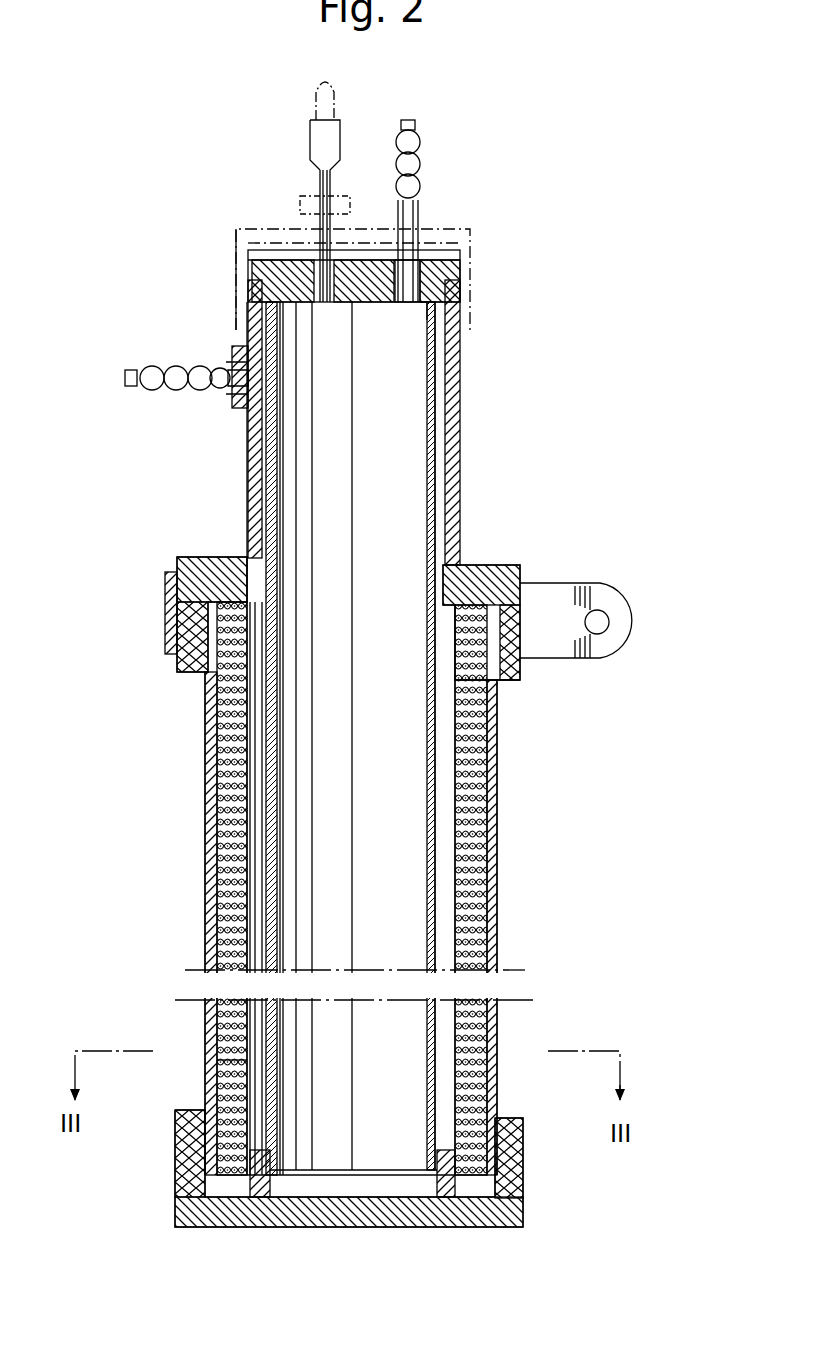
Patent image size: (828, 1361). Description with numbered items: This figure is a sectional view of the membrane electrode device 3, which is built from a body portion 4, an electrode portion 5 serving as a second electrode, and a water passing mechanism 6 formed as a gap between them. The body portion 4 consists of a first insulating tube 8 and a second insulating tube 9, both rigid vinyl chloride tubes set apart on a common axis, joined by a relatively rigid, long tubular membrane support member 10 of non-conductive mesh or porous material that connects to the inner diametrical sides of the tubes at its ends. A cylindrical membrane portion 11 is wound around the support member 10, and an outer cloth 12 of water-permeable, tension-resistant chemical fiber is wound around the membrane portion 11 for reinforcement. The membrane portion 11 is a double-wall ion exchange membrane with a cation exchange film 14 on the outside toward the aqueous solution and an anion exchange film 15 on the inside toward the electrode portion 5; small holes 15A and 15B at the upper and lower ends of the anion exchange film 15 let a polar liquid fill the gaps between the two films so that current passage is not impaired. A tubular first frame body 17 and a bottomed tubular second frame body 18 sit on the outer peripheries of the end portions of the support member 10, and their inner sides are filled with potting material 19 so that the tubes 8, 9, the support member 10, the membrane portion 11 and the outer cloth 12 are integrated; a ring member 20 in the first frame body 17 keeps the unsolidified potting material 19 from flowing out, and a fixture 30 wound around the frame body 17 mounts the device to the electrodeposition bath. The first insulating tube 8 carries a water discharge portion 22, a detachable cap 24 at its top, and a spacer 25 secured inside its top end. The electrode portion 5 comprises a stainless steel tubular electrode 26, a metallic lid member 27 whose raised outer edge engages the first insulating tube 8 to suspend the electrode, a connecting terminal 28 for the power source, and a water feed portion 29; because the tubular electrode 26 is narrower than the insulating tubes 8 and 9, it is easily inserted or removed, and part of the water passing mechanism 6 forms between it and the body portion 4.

The membrane electrode device 3 is at (507, 272).
The body portion 4 is at (462, 372).
The electrode portion 5 is at (440, 470).
The water passing mechanism 6 is at (276, 1200).
The first insulating tube 8 is at (248, 432).
The second insulating tube 9 is at (250, 1200).
The membrane support member 10 is at (500, 797).
The membrane portion 11 is at (500, 870).
The outer cloth 12 is at (498, 940).
The cation exchange film 14 is at (487, 590).
The anion exchange film 15 is at (476, 575).
The small hole 15A is at (210, 697).
The small hole 15B is at (218, 1062).
The first frame body 17 is at (184, 552).
The second frame body 18 is at (185, 1178).
The potting material 19 is at (215, 550).
The ring member 20 is at (500, 688).
The water discharge portion 22 is at (170, 366).
The cap 24 is at (248, 228).
The spacer 25 is at (432, 334).
The tubular electrode 26 is at (250, 843).
The metallic lid member 27 is at (450, 262).
The connecting terminal 28 is at (338, 268).
The water feed portion 29 is at (430, 235).
The fixture 30 is at (618, 628).